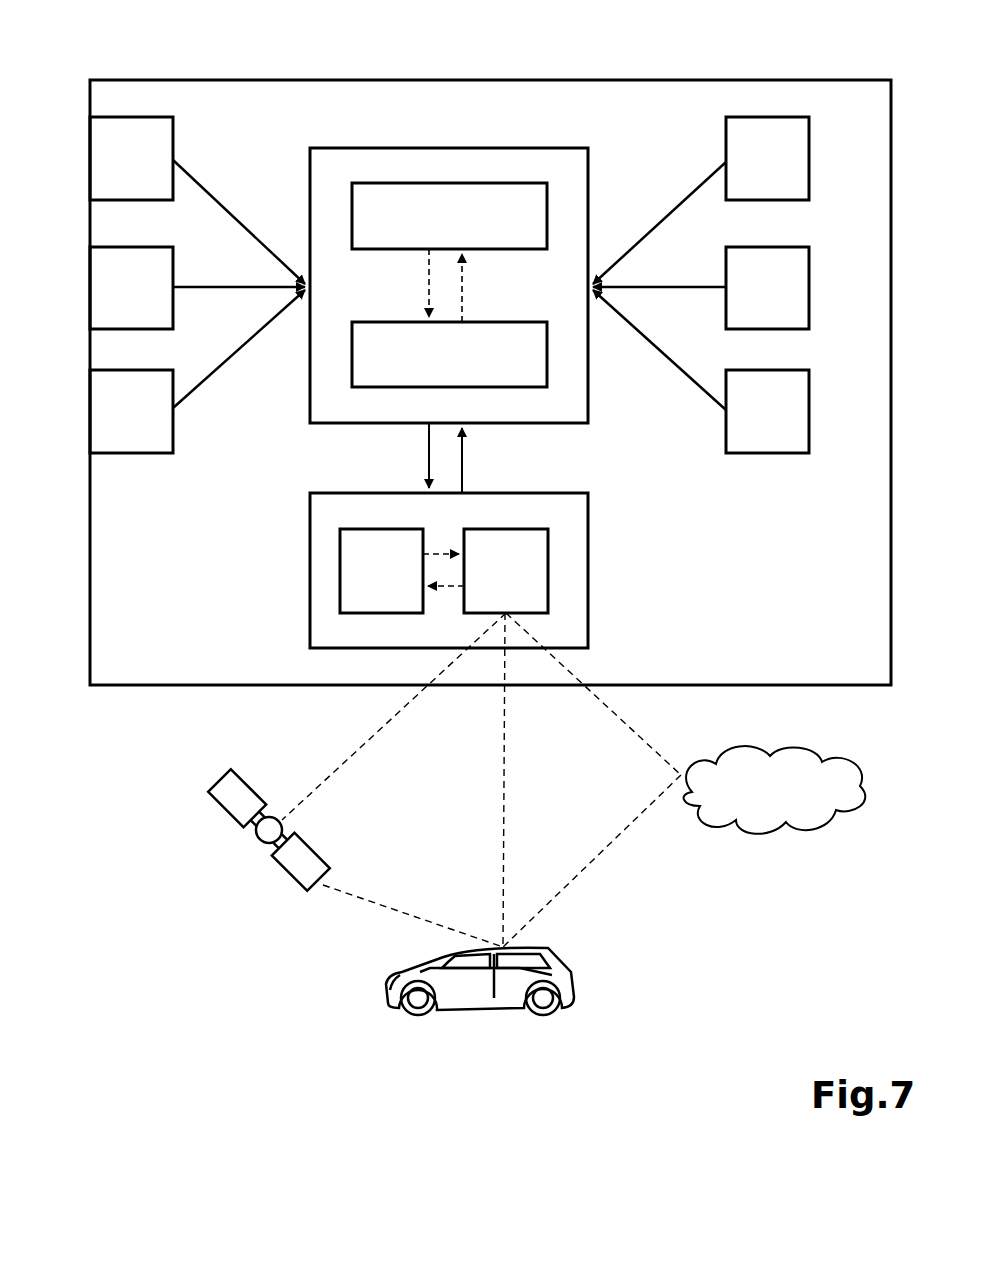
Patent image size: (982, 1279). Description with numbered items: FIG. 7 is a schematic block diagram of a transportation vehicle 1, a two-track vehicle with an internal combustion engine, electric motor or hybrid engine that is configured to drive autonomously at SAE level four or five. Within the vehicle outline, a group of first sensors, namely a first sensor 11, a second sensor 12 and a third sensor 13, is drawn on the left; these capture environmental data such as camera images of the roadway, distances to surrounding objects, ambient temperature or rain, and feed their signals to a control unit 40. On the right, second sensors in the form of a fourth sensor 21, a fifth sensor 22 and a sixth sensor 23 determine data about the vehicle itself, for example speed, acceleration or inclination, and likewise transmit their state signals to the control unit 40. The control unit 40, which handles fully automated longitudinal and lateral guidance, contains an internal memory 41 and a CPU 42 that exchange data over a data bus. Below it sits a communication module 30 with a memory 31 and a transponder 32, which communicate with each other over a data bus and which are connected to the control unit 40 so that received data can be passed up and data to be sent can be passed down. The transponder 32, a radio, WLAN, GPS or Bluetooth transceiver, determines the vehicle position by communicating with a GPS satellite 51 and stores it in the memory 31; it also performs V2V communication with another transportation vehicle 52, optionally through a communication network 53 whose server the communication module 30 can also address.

The transportation vehicle 1 is at (213, 80).
The first sensor 11 is at (107, 155).
The second sensor 12 is at (107, 283).
The third sensor 13 is at (107, 406).
The fourth sensor 21 is at (795, 160).
The fifth sensor 22 is at (795, 288).
The sixth sensor 23 is at (795, 410).
The communication module 30 is at (333, 648).
The memory 31 is at (355, 567).
The transponder 32 is at (540, 565).
The control unit 40 is at (368, 148).
The internal memory 41 is at (483, 196).
The CPU 42 is at (358, 372).
The GPS satellite 51 is at (290, 878).
The another transportation vehicle 52 is at (485, 1012).
The communication network 53 is at (773, 832).